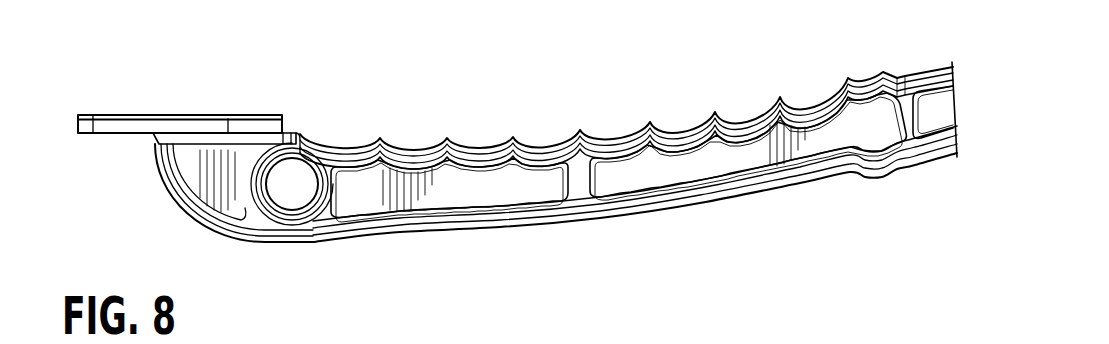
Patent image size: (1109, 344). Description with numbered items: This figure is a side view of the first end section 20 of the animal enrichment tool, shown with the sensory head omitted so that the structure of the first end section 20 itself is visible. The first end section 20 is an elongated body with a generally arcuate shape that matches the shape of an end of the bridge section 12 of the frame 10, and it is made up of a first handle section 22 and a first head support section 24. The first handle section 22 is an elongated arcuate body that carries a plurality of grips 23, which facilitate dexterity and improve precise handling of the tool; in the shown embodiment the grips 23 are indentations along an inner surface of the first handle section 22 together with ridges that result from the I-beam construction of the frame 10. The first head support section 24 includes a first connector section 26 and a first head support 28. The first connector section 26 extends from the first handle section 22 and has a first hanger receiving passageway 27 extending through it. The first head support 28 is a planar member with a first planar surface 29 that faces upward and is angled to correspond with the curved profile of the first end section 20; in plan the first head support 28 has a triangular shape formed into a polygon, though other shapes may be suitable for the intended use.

The frame 10 is at (952, 153).
The bridge section 12 is at (925, 67).
The first end section 20 is at (485, 230).
The first handle section 22 is at (727, 203).
The grips 23 is at (490, 140).
The first head support section 24 is at (293, 127).
The first connector section 26 is at (207, 197).
The first hanger receiving passageway 27 is at (297, 197).
The first head support 28 is at (94, 133).
The first planar surface 29 is at (107, 116).